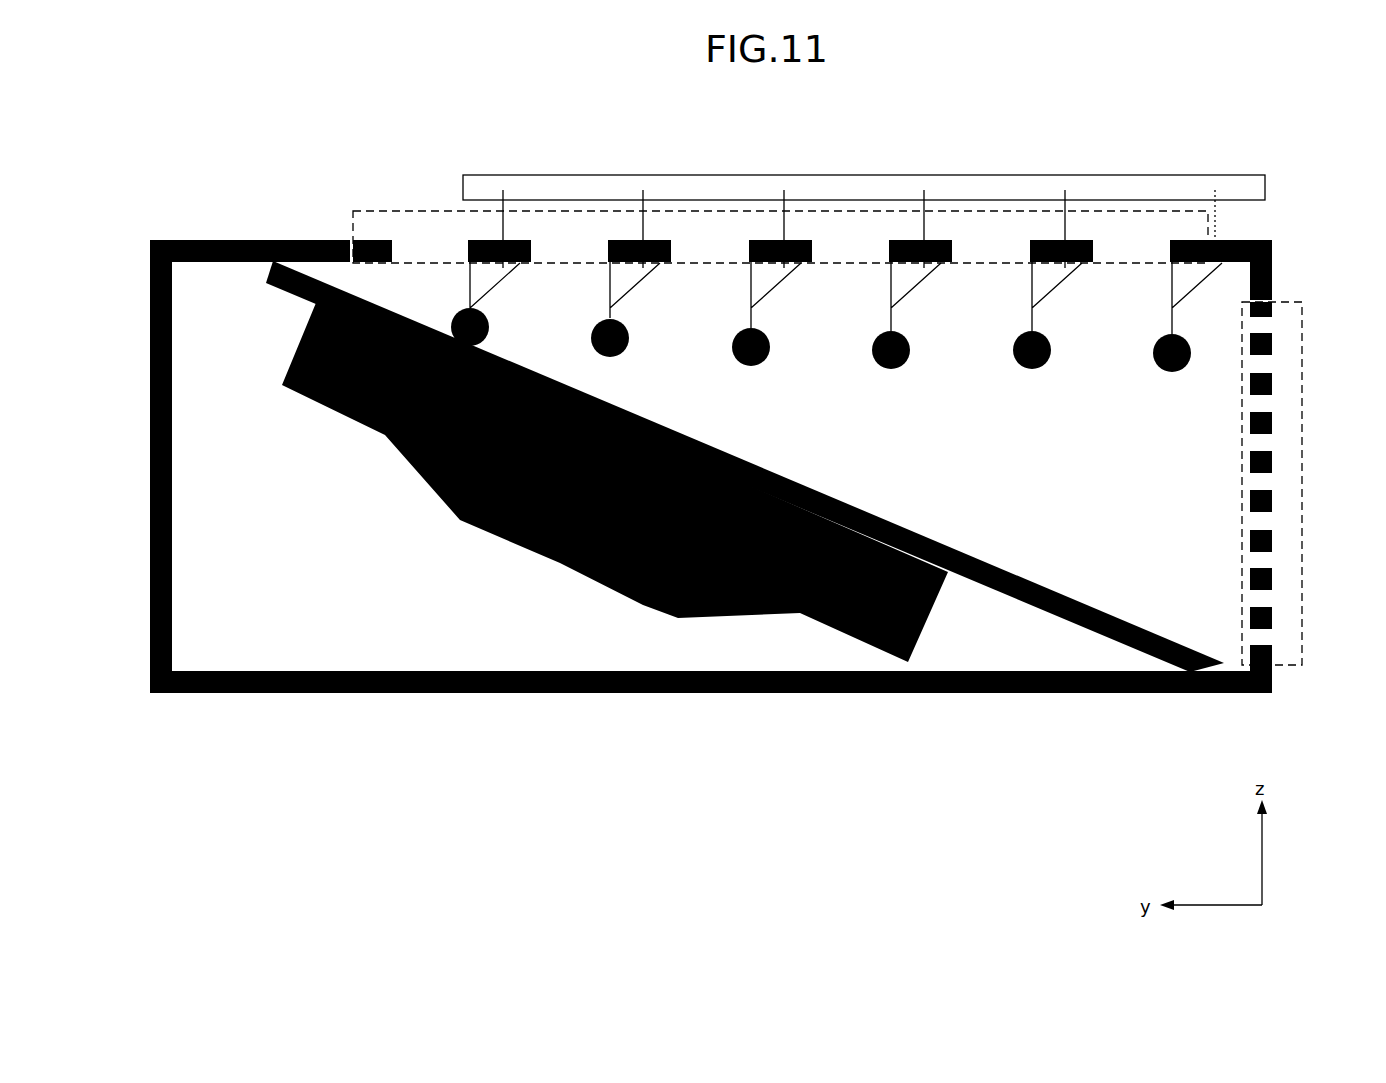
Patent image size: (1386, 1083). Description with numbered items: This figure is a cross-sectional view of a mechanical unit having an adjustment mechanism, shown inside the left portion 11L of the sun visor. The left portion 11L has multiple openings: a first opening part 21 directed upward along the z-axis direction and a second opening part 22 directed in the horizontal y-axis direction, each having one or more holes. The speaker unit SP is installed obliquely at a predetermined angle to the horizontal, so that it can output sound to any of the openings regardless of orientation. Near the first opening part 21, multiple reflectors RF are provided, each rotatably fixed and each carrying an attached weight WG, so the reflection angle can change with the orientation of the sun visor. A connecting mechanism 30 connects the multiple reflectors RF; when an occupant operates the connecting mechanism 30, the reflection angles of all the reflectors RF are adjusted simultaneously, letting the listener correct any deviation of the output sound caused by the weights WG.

The left portion 11L is at (172, 240).
The first opening part 21 is at (424, 211).
The second opening part 22 is at (1303, 408).
The connecting mechanism 30 is at (1268, 188).
The reflector RF is at (482, 281).
The weight WG is at (488, 335).
The speaker unit SP is at (645, 612).